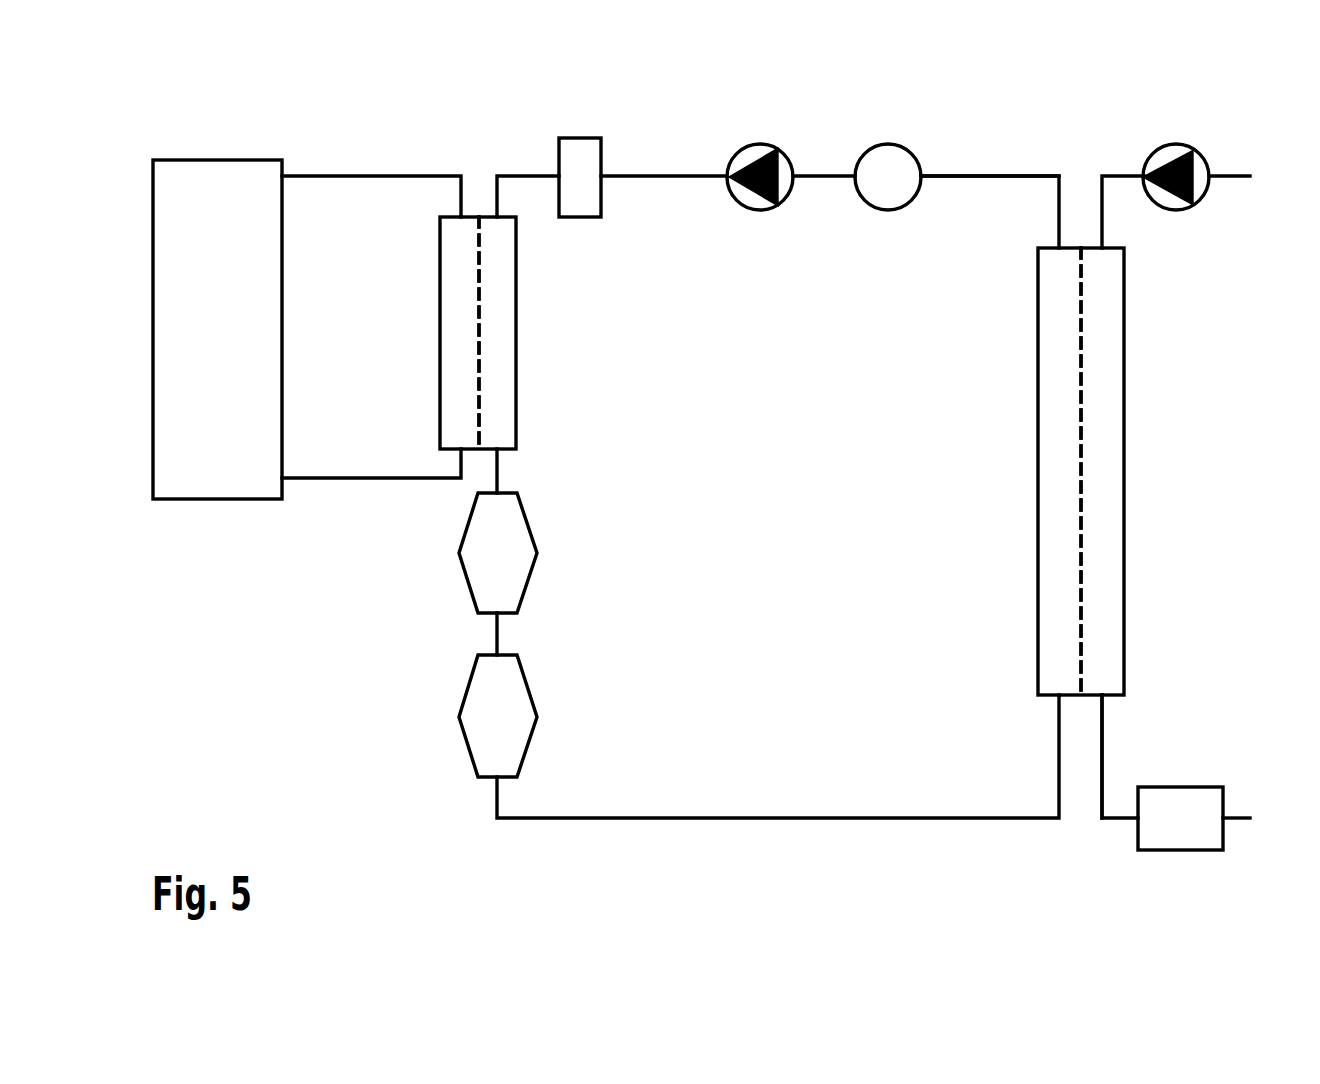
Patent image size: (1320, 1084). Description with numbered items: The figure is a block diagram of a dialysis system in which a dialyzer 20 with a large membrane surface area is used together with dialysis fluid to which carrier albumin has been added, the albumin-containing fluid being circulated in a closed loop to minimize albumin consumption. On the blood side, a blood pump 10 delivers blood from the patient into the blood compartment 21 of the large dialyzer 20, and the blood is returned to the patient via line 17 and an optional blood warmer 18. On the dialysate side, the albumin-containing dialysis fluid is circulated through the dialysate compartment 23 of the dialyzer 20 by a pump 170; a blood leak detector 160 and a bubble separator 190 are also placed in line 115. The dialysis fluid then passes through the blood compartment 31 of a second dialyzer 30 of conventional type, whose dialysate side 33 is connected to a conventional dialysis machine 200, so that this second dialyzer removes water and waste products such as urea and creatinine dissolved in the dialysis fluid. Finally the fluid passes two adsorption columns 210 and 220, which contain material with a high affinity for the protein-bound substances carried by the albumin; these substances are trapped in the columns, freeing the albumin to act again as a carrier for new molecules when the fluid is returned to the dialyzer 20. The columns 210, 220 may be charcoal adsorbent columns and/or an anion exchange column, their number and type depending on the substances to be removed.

The conventional dialysis machine 200 is at (215, 160).
The bubble separator 190 is at (580, 138).
The pump 170 is at (760, 144).
The blood leak detector 160 is at (888, 144).
The line 115 is at (1005, 176).
The blood pump 10 is at (1203, 160).
The dialyzer 20 is at (1124, 298).
The blood compartment 21 is at (1103, 452).
The dialysate compartment 23 is at (1049, 412).
The second dialyzer 30 is at (517, 290).
The blood compartment 31 is at (498, 383).
The dialysate side 33 is at (456, 330).
The adsorption column 210 is at (530, 537).
The adsorption column 220 is at (530, 699).
The line 17 is at (1103, 762).
The blood warmer 18 is at (1173, 850).